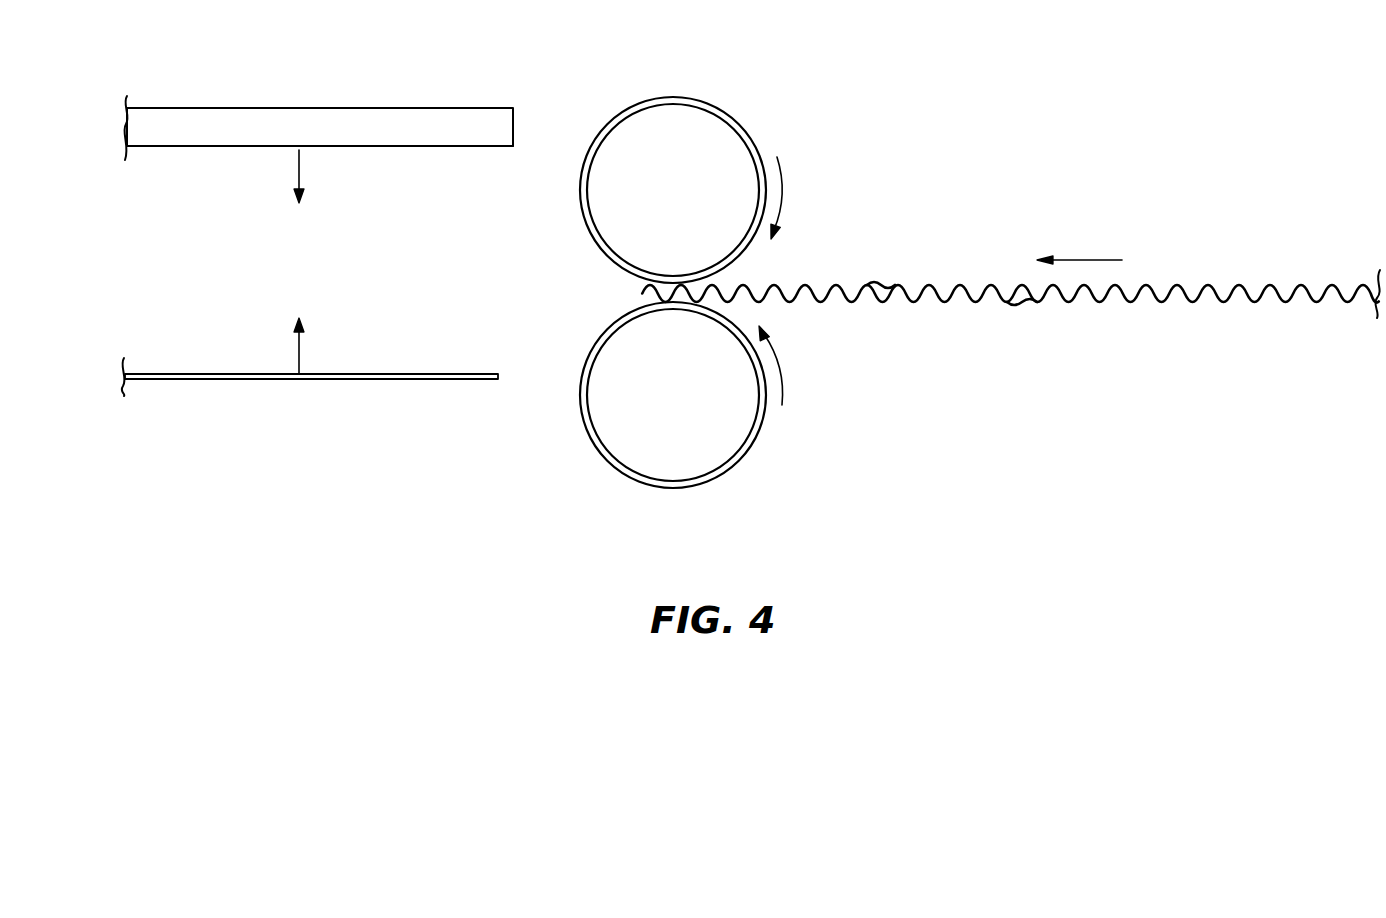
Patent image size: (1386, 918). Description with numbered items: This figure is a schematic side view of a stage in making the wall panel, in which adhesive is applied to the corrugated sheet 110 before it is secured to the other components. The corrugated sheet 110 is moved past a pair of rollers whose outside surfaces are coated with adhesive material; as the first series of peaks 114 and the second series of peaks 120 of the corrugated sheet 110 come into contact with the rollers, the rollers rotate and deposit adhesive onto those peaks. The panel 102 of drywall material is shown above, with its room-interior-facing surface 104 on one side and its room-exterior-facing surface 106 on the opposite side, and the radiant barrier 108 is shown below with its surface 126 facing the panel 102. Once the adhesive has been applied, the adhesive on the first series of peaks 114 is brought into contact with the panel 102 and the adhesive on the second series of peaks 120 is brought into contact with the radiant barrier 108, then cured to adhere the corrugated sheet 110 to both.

The panel of drywall material 102 is at (393, 123).
The room-interior-facing surface 104 is at (348, 120).
The room-exterior-facing surface 106 is at (480, 156).
The radiant barrier 108 is at (387, 380).
The corrugated sheet 110 is at (1180, 295).
The first series of peaks 114 is at (895, 285).
The second series of peaks 120 is at (1037, 302).
The surface of the radiant barrier facing the panel 126 is at (310, 372).